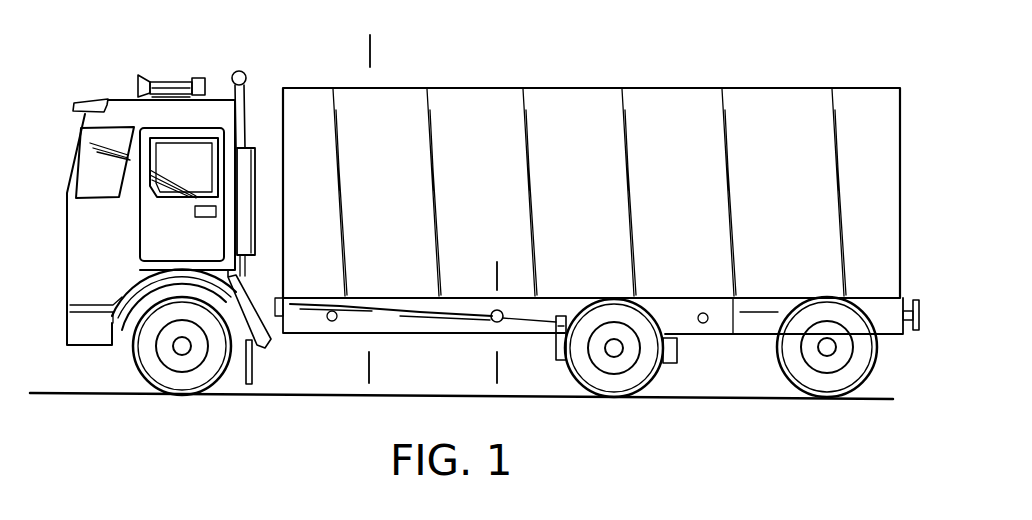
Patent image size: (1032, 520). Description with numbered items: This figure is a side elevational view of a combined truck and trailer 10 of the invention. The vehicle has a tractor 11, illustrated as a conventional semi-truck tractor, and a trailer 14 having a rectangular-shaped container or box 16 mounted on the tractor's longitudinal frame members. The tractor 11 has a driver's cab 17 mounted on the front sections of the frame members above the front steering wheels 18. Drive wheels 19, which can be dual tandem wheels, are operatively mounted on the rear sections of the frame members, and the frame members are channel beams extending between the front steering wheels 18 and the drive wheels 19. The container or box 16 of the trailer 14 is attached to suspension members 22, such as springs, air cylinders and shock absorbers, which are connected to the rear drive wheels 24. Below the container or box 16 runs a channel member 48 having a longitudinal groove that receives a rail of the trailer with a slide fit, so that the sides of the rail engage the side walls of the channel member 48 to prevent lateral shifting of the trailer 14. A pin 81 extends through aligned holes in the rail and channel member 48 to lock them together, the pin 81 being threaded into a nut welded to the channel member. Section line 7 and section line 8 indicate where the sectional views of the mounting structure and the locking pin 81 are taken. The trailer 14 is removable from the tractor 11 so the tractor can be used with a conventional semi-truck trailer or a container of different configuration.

The combined truck and trailer 10 is at (560, 51).
The tractor 11 is at (205, 66).
The trailer 14 is at (821, 86).
The container or box 16 is at (688, 102).
The driver's cab 17 is at (77, 150).
The front steering wheels 18 is at (157, 368).
The drive wheels 19 is at (646, 353).
The suspension members 22 is at (893, 313).
The rear drive wheels 24 is at (813, 383).
The channel member 48 is at (365, 313).
The pin 81 is at (504, 311).
The section line 7- 7 is at (370, 48).
The section line 8- 8 is at (497, 274).